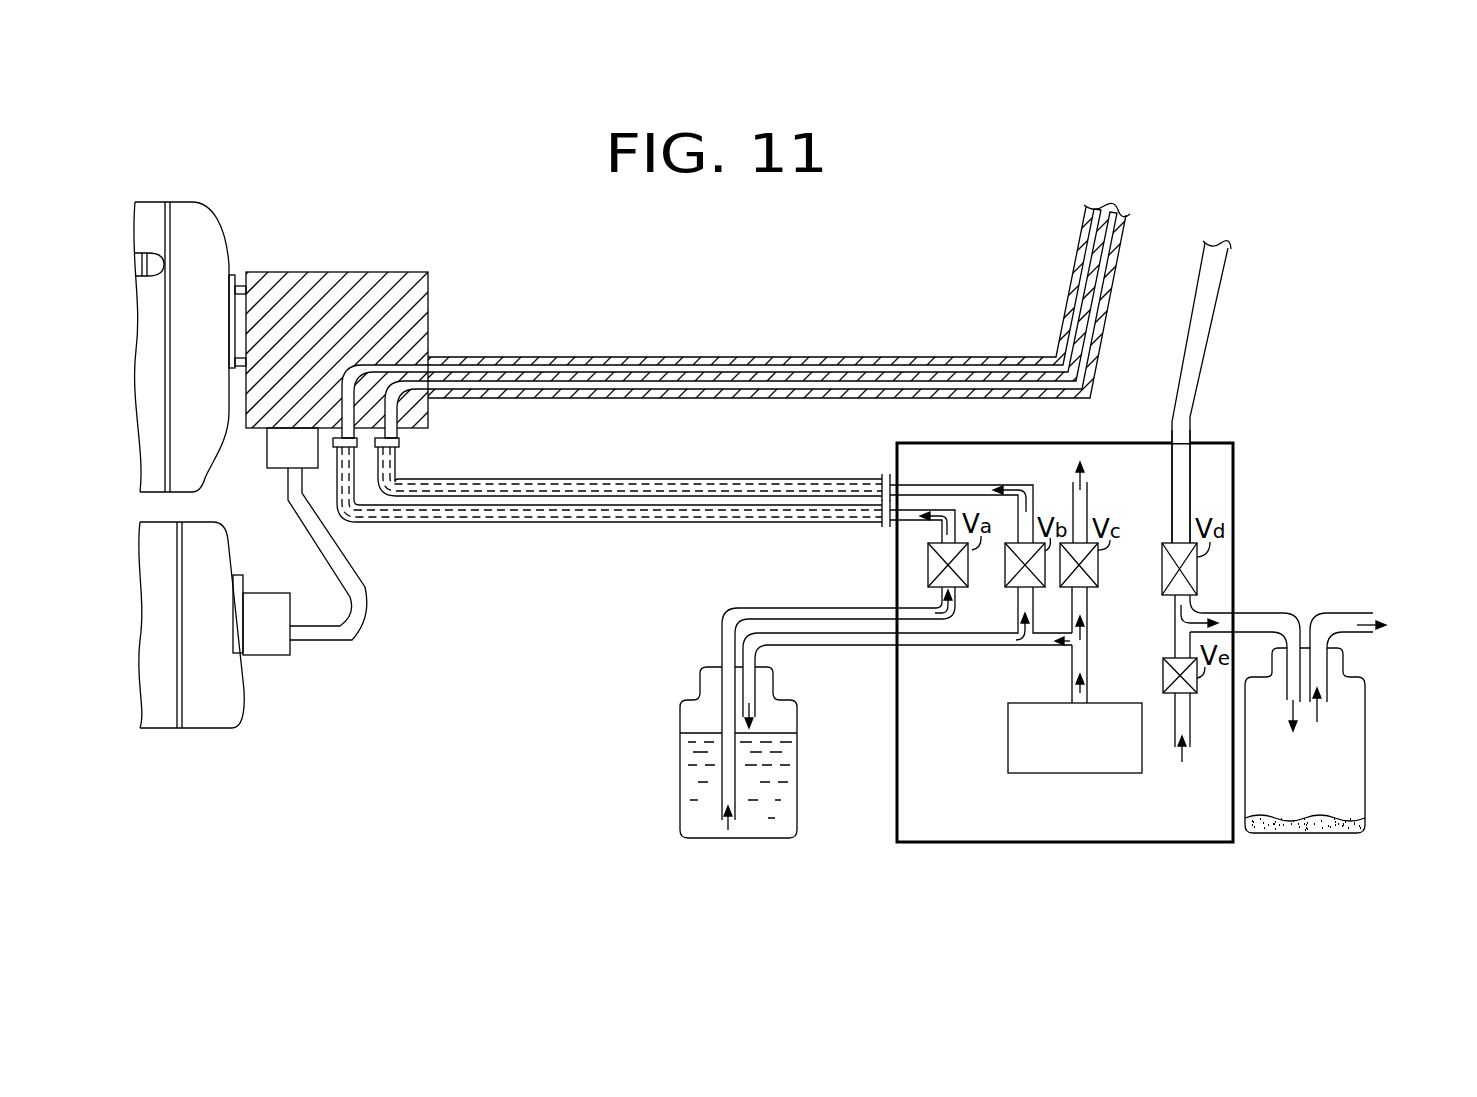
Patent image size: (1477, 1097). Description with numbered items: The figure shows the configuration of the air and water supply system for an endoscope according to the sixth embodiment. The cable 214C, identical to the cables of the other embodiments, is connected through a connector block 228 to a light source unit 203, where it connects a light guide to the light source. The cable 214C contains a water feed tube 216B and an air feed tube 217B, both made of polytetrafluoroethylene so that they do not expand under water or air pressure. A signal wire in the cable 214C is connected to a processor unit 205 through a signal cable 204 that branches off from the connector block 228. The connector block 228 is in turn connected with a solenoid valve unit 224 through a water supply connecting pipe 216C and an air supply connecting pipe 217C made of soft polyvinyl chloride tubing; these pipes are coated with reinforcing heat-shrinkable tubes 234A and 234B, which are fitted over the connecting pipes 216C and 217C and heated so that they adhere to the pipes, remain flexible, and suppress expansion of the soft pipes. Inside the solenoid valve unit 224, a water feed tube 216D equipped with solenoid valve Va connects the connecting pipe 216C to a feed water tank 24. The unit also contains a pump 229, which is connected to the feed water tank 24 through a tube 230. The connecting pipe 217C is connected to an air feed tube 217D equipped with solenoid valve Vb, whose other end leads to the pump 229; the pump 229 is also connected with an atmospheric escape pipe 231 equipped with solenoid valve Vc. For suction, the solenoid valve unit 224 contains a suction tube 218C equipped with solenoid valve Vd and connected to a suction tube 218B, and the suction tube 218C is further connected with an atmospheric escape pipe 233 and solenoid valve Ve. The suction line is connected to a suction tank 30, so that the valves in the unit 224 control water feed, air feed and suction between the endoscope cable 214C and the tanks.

The light source unit 203 is at (206, 214).
The connector block 228 is at (383, 272).
The signal cable 204 is at (357, 575).
The processor unit 205 is at (245, 695).
The water feed tube 216B is at (710, 367).
The air feed tube 217B is at (700, 390).
The cable 214C is at (1082, 260).
The suction tube 218B is at (1207, 300).
The suction tube 218C is at (1186, 477).
The air supply connecting pipe 217C is at (530, 479).
The heat-shrinkable tube 234B is at (622, 484).
The water supply connecting pipe 216C is at (512, 524).
The heat-shrinkable tube 234A is at (598, 517).
The air feed tube 217D is at (933, 457).
The water feed tube 216D is at (857, 554).
The atmospheric escape pipe 231 is at (1088, 492).
The solenoid valve unit 224 is at (1237, 458).
The tube 230 is at (837, 645).
The feed water tank 24 is at (680, 747).
The pump 229 is at (1008, 745).
The atmospheric escape pipe 233 is at (1190, 732).
The suction tank 30 is at (1367, 702).